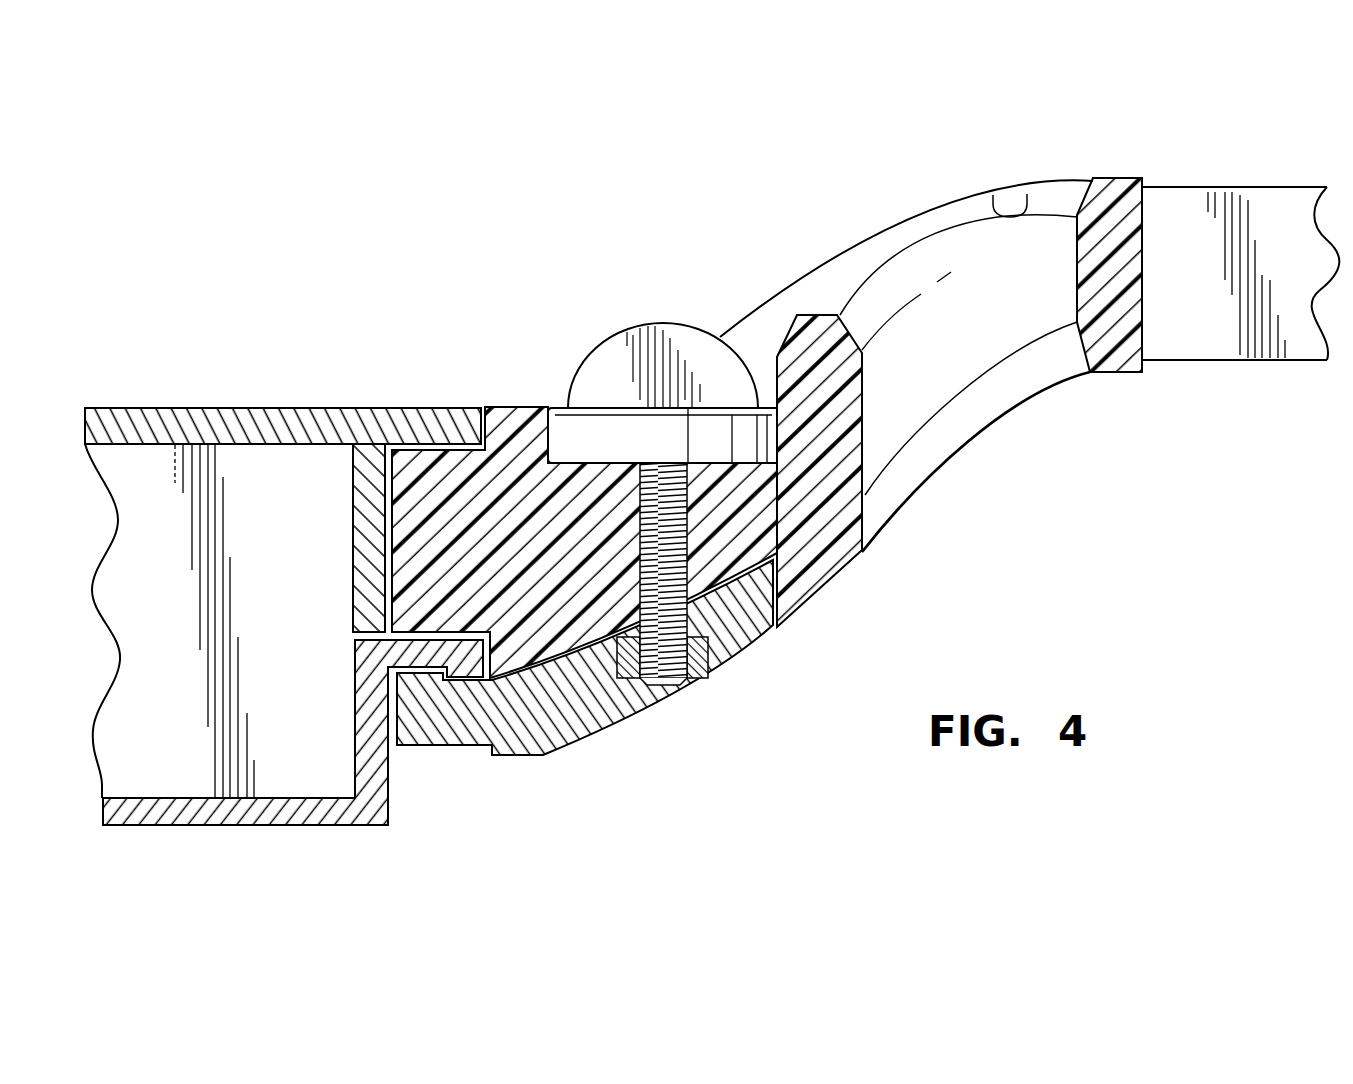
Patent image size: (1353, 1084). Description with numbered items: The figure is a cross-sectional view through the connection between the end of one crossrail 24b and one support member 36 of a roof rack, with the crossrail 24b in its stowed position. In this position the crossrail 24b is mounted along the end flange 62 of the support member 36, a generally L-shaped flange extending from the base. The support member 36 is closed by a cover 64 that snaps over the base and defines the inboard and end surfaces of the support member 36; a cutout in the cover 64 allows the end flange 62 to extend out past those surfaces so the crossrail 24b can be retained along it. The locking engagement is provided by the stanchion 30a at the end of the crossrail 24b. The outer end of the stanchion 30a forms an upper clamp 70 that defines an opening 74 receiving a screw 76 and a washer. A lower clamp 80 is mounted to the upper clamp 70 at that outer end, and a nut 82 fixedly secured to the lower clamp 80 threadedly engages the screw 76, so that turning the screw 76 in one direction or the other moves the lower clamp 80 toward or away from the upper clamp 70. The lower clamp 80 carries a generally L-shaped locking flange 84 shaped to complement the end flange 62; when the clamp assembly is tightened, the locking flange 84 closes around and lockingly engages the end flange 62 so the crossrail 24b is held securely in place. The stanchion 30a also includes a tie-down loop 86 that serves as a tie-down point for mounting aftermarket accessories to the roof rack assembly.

The crossrail 24b is at (1279, 187).
The stanchion 30a is at (906, 349).
The support member 36 is at (284, 609).
The end flange 62 is at (585, 722).
The cover 64 is at (370, 408).
The upper clamp 70 is at (383, 545).
The opening 74 is at (633, 436).
The screw 76 is at (603, 338).
The lower clamp 80 is at (457, 747).
The nut 82 is at (702, 668).
The locking flange 84 is at (390, 730).
The tie-down loop 86 is at (1027, 194).